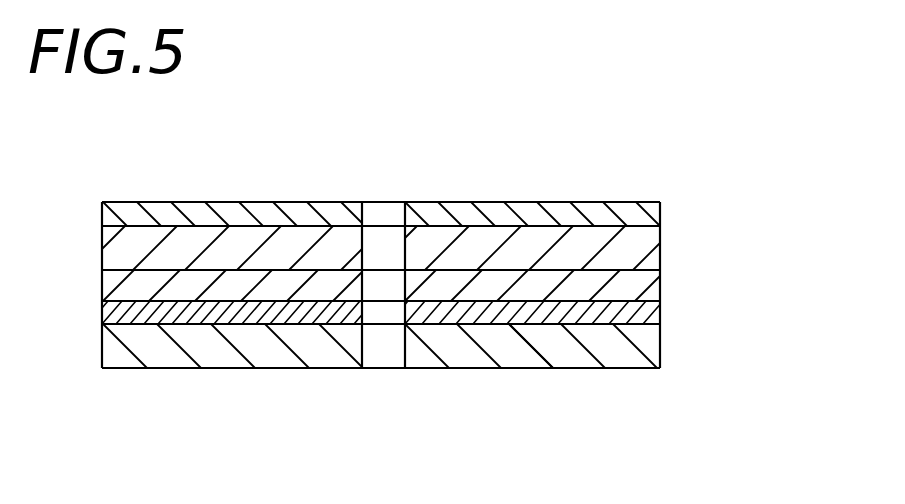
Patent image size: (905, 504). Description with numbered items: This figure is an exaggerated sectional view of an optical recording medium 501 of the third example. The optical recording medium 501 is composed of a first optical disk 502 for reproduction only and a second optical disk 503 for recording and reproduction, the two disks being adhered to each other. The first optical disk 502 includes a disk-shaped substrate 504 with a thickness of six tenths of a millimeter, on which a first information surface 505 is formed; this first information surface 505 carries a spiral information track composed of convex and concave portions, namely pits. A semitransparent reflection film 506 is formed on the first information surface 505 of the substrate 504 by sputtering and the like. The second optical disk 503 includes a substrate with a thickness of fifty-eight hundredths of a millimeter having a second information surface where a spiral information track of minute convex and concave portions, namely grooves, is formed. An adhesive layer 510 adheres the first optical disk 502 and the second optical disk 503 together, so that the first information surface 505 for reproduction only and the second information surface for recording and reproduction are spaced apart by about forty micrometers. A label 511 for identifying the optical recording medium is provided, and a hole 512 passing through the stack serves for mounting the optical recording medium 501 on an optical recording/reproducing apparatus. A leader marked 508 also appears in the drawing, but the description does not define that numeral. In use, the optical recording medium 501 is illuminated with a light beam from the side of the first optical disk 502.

The optical recording medium 501 is at (532, 202).
The first optical disk 502 is at (486, 350).
The second optical disk 503 is at (645, 243).
The substrate 504 is at (650, 342).
The first information surface 505 is at (543, 323).
The semitransparent reflection film 506 is at (655, 306).
The intermediate layer 508 is at (172, 270).
The adhesive layer 510 is at (652, 280).
The label 511 is at (653, 210).
The hole 512 is at (380, 370).